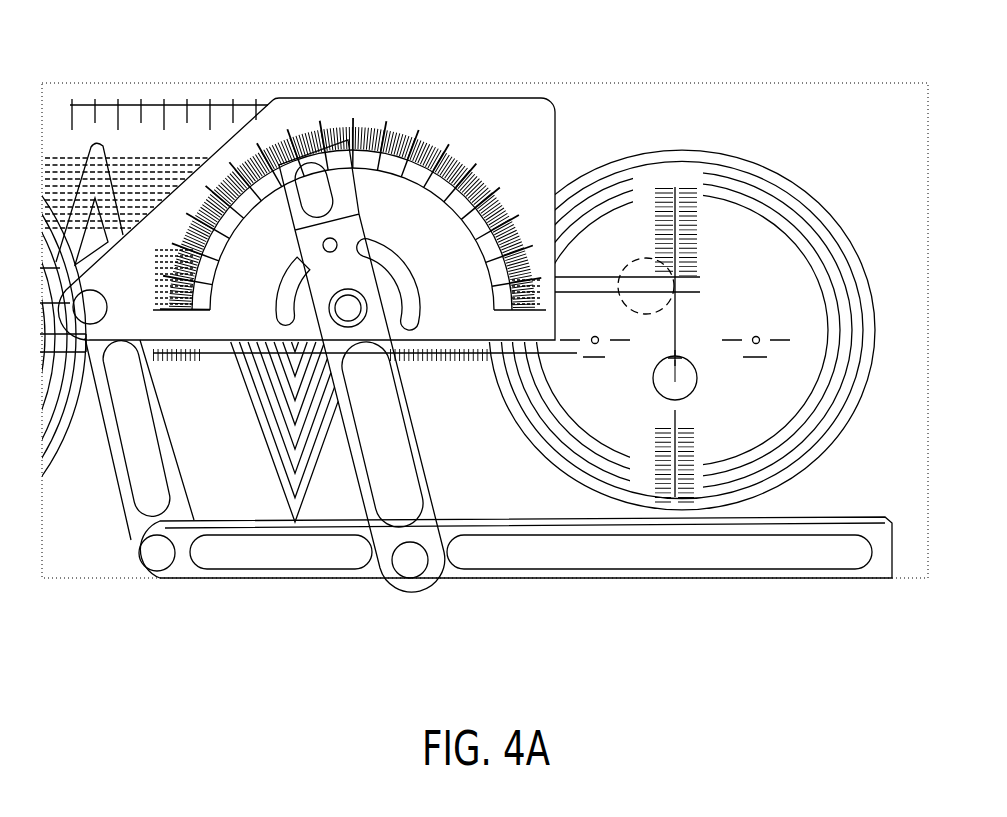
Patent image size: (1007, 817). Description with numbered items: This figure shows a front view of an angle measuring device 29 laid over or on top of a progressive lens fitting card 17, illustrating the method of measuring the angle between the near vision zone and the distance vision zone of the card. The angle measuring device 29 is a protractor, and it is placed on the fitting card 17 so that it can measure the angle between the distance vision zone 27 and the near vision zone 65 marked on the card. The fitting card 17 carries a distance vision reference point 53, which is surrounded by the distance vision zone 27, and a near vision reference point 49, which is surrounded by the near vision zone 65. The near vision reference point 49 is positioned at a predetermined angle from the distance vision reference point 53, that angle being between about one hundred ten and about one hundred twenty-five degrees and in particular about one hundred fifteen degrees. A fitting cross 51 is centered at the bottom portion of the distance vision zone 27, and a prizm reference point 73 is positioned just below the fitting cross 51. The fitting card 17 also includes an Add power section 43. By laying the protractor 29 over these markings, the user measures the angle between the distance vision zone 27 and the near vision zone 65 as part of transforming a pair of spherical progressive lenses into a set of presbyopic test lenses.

The lens fitting card 17 is at (742, 146).
The distance vision zone 27 is at (695, 395).
The angle measuring device 29 is at (440, 138).
The Add power section 43 is at (757, 363).
The near vision reference point 49 is at (657, 275).
The fitting cross 51 is at (683, 360).
The distance vision reference point 53 is at (675, 378).
The near vision zone 65 is at (633, 262).
The prizm reference point 73 is at (677, 355).